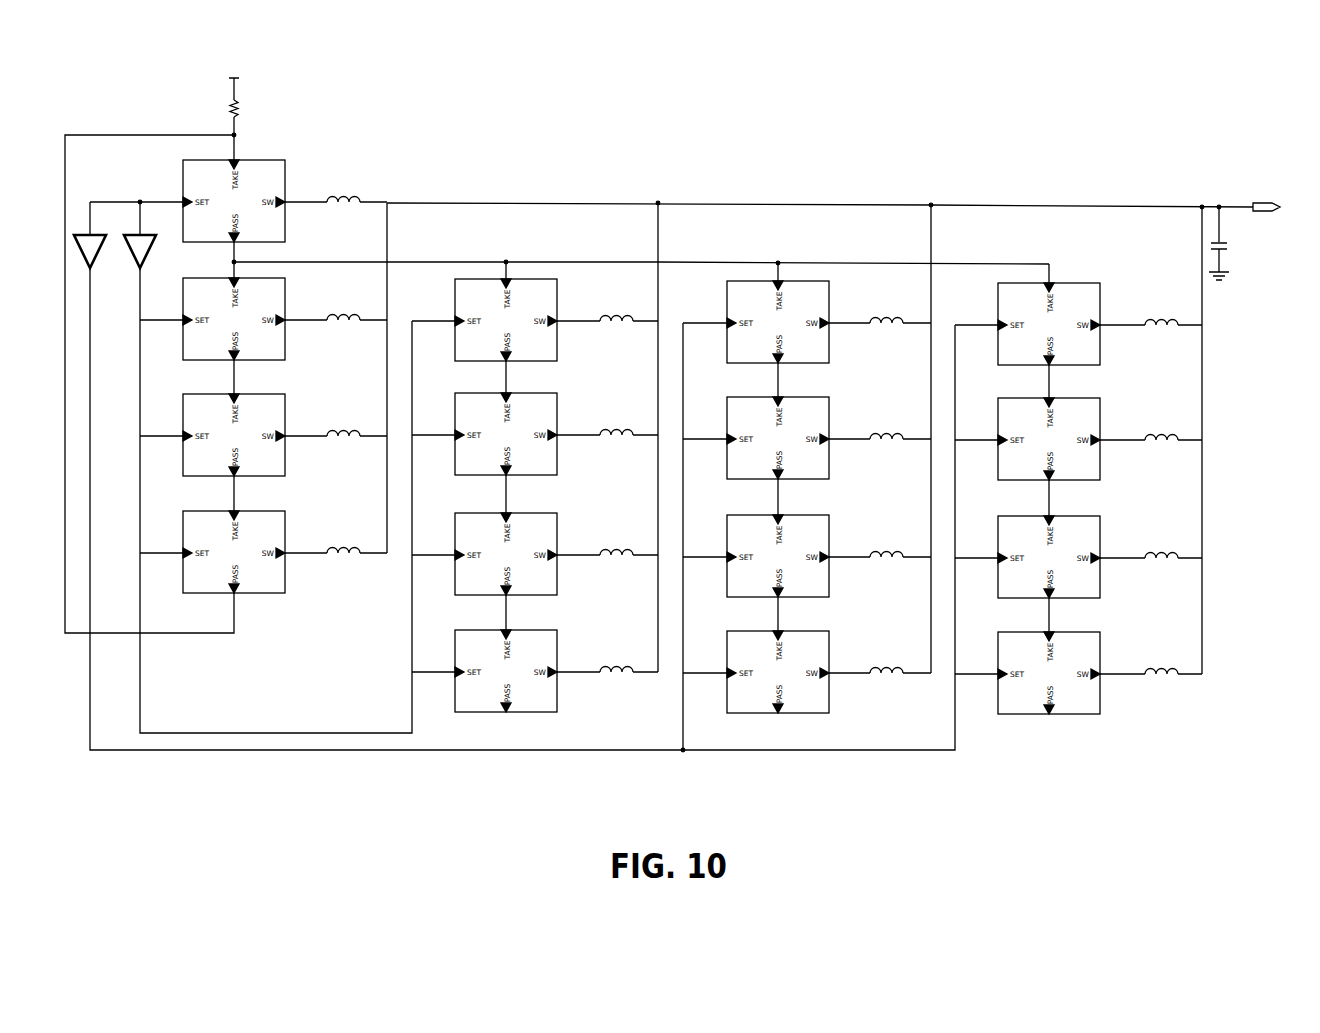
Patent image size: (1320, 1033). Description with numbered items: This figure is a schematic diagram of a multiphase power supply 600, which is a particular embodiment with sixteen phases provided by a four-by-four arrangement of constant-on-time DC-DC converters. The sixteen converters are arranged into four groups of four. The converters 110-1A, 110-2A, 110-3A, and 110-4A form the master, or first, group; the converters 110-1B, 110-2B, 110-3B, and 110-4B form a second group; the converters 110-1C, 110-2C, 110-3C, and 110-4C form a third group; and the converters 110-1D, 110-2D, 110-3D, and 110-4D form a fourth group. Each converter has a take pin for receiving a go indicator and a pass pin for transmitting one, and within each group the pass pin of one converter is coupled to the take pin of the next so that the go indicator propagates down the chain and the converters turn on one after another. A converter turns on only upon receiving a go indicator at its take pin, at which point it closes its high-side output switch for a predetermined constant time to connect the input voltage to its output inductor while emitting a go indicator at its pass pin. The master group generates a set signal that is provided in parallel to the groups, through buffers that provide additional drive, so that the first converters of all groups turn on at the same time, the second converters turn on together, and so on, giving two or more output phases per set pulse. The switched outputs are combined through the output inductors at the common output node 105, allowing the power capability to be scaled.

The multiphase power supply 600 is at (655, 124).
The output node VOUT 105 is at (1262, 205).
The converter 110-1A is at (265, 160).
The converter 110-2A is at (286, 294).
The converter 110-3A is at (278, 394).
The converter 110-4A is at (272, 511).
The converter 110-1B is at (558, 293).
The converter 110-2B is at (550, 393).
The converter 110-3B is at (550, 513).
The converter 110-4B is at (553, 630).
The converter 110-1C is at (830, 294).
The converter 110-2C is at (818, 397).
The converter 110-3C is at (818, 515).
The converter 110-4C is at (818, 631).
The converter 110-1D is at (1101, 295).
The converter 110-2D is at (1092, 398).
The converter 110-3D is at (1092, 516).
The converter 110-4D is at (1087, 632).